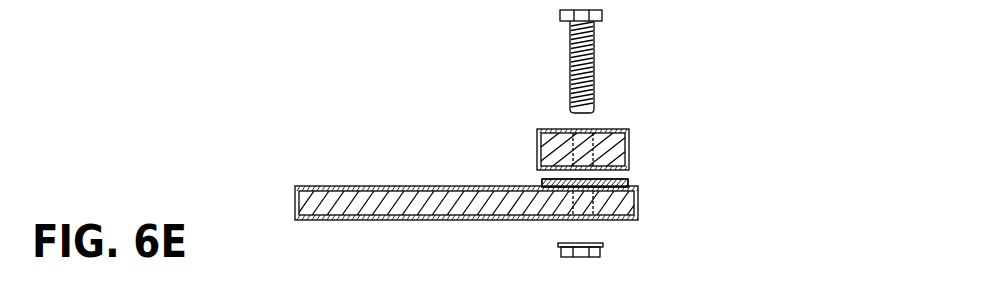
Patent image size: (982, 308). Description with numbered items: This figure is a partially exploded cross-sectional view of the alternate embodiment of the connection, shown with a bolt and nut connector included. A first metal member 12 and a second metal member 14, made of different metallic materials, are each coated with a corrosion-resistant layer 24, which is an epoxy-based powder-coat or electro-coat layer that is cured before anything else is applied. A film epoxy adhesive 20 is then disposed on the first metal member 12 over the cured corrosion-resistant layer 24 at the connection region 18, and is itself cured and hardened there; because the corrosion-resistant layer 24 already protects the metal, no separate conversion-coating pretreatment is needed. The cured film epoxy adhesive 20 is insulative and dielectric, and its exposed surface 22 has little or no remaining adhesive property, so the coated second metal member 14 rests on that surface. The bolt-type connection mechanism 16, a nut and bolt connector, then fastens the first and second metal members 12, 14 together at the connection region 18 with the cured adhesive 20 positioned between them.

The first metal member 12 is at (320, 202).
The second metal member 14 is at (618, 128).
The bolt-type connection mechanism 16 is at (570, 52).
The connection region 18 is at (557, 189).
The film epoxy adhesive 20 is at (628, 183).
The exposed surface 22 is at (545, 184).
The corrosion-resistant layer 24 is at (412, 189).